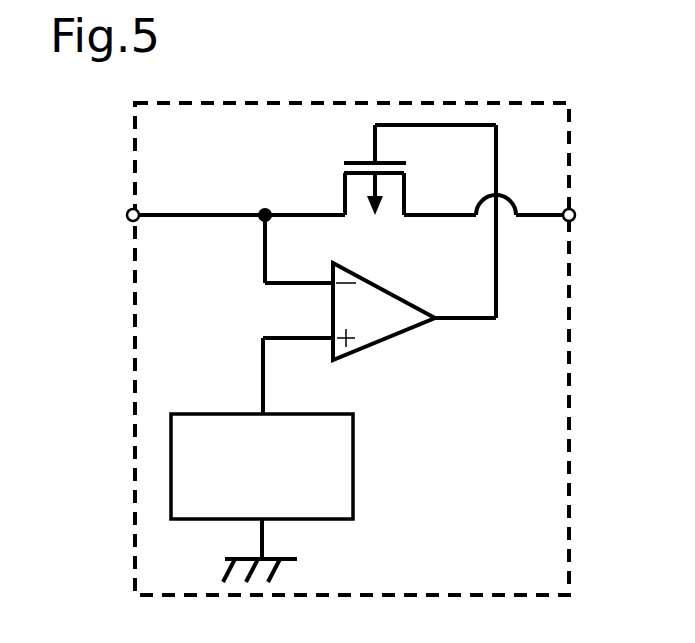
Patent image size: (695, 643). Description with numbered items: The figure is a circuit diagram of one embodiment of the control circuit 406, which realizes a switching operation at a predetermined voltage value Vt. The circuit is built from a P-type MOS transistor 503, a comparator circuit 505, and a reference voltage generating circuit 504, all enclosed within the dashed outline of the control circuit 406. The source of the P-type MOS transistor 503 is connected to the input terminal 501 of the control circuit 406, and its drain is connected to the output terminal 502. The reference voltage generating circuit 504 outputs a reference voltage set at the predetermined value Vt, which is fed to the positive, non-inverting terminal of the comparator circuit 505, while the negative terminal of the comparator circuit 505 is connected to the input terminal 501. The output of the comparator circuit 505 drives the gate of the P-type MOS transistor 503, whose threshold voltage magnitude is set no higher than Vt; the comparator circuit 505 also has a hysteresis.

The control circuit 406 is at (571, 428).
The input terminal 501 is at (128, 211).
The output terminal 502 is at (575, 209).
The P-type MOS transistor 503 is at (334, 168).
The reference voltage generating circuit 504 is at (170, 518).
The comparator circuit 505 is at (386, 340).